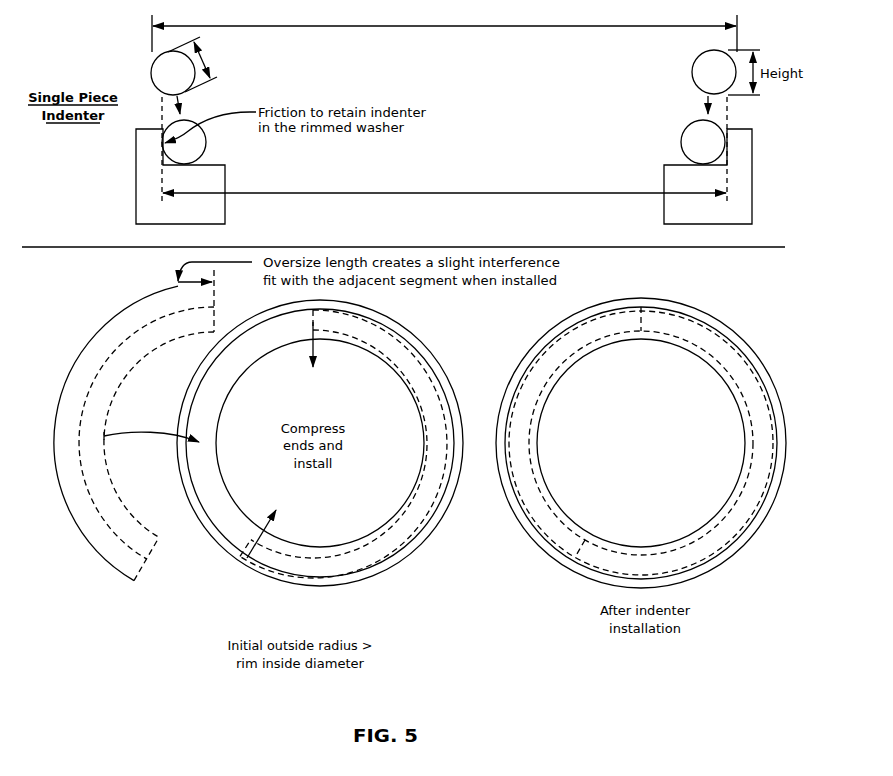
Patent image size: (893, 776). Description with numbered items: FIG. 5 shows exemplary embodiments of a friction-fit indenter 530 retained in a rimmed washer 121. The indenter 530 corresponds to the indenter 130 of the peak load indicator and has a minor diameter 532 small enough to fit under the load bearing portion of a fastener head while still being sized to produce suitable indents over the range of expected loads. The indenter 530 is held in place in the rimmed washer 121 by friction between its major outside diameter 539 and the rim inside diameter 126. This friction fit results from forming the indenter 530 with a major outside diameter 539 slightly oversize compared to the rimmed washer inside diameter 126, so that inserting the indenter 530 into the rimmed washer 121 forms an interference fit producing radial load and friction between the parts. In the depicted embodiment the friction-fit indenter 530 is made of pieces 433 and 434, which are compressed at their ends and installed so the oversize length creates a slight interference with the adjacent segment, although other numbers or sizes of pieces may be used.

The rimmed washer 121 is at (661, 181).
The rim inside diameter 126 is at (444, 204).
The indenter 130 is at (702, 52).
The piece 433 is at (309, 585).
The piece 434 is at (119, 540).
The friction-fit indenter 530 is at (140, 629).
The minor diameter 532 is at (202, 64).
The major outside diameter 539 is at (444, 29).